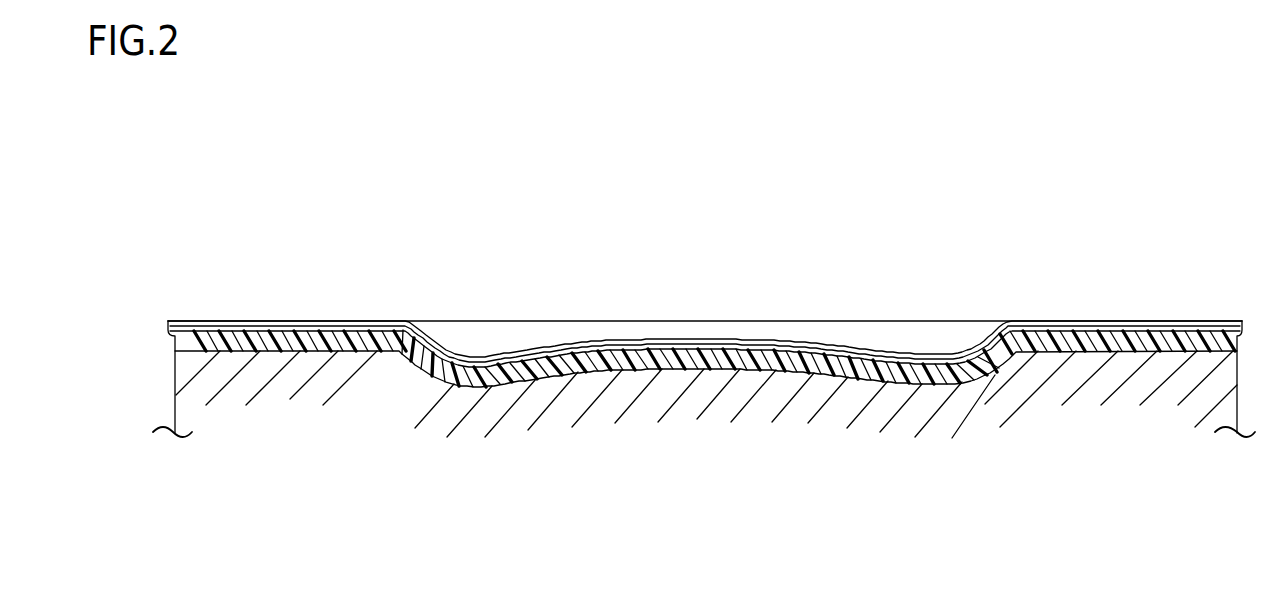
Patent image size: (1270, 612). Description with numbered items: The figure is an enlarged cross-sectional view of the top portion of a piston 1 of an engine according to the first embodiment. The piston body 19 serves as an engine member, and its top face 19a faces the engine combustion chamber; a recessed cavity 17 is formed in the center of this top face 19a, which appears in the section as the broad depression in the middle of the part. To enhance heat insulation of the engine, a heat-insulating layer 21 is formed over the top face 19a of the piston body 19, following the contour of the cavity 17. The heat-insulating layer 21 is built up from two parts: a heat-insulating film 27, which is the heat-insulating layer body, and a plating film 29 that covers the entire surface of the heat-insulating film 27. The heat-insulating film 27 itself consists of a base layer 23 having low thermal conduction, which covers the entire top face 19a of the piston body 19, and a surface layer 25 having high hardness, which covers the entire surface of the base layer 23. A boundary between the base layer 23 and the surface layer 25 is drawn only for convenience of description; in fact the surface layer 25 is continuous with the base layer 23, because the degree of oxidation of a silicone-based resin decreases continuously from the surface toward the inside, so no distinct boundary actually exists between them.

The piston 1 is at (174, 403).
The cavity 17 is at (833, 344).
The piston body 19 is at (285, 388).
The top face 19a is at (743, 368).
The heat-insulating layer 21 is at (517, 455).
The base layer 23 is at (701, 360).
The surface layer 25 is at (658, 350).
The heat-insulating film 27 is at (573, 490).
The plating film 29 is at (612, 346).